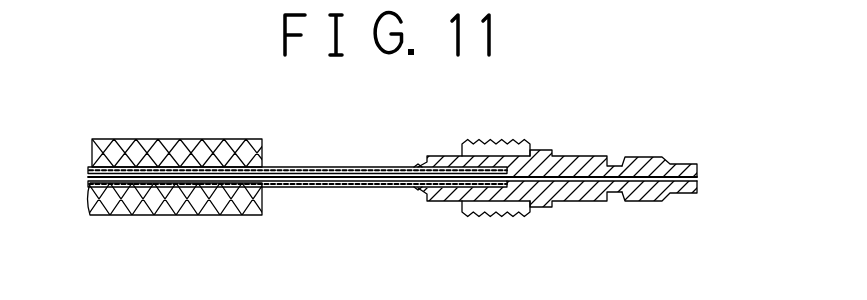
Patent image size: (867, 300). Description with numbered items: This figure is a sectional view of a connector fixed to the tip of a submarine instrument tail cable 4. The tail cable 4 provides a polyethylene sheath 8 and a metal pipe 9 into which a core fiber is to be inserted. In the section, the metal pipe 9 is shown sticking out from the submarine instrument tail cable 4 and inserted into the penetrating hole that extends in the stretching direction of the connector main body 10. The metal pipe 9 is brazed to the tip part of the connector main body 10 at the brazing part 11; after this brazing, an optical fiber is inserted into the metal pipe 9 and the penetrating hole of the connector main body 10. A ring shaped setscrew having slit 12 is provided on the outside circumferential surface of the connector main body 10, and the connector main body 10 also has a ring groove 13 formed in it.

The submarine instrument tail cable 4 is at (179, 130).
The polyethylene sheath 8 is at (178, 216).
The metal pipe 9 is at (327, 166).
The connector main body 10 is at (586, 157).
The brazing part 11 is at (414, 192).
The ring shaped setscrew having slit 12 is at (501, 141).
The ring groove 13 is at (614, 199).